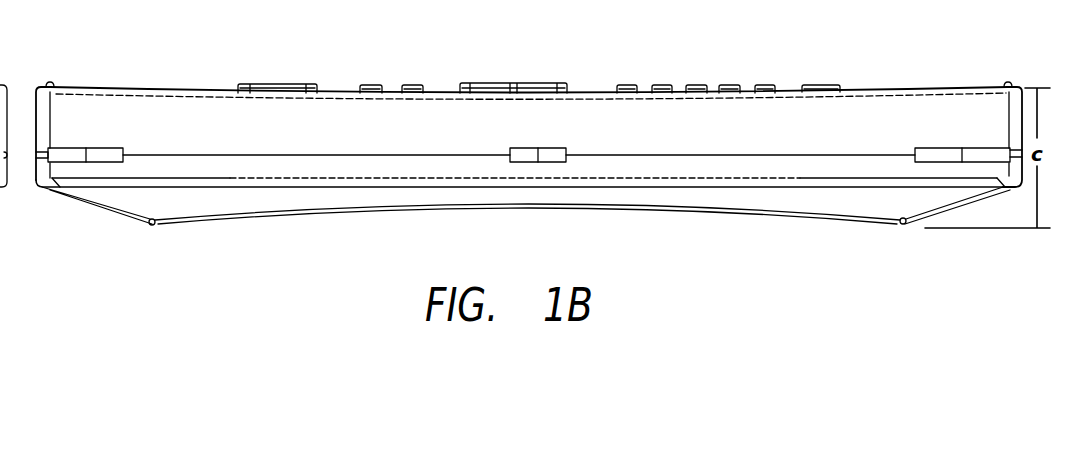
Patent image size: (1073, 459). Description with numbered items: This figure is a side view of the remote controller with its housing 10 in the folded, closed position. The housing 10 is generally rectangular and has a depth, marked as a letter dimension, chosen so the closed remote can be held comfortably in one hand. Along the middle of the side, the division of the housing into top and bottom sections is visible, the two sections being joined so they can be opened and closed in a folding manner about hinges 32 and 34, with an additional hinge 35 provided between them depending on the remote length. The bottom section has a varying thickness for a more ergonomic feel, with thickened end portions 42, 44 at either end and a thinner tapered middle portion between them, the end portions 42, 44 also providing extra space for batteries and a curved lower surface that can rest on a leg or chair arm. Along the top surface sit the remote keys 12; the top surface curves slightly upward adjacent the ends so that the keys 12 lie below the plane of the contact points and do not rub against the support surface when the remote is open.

The housing 10 is at (531, 151).
The remote keys 12 is at (680, 78).
The hinge 32 is at (95, 148).
The hinge 34 is at (930, 147).
The hinge 35 is at (548, 147).
The thickened end portion 42 is at (170, 214).
The thickened end portion 44 is at (881, 214).